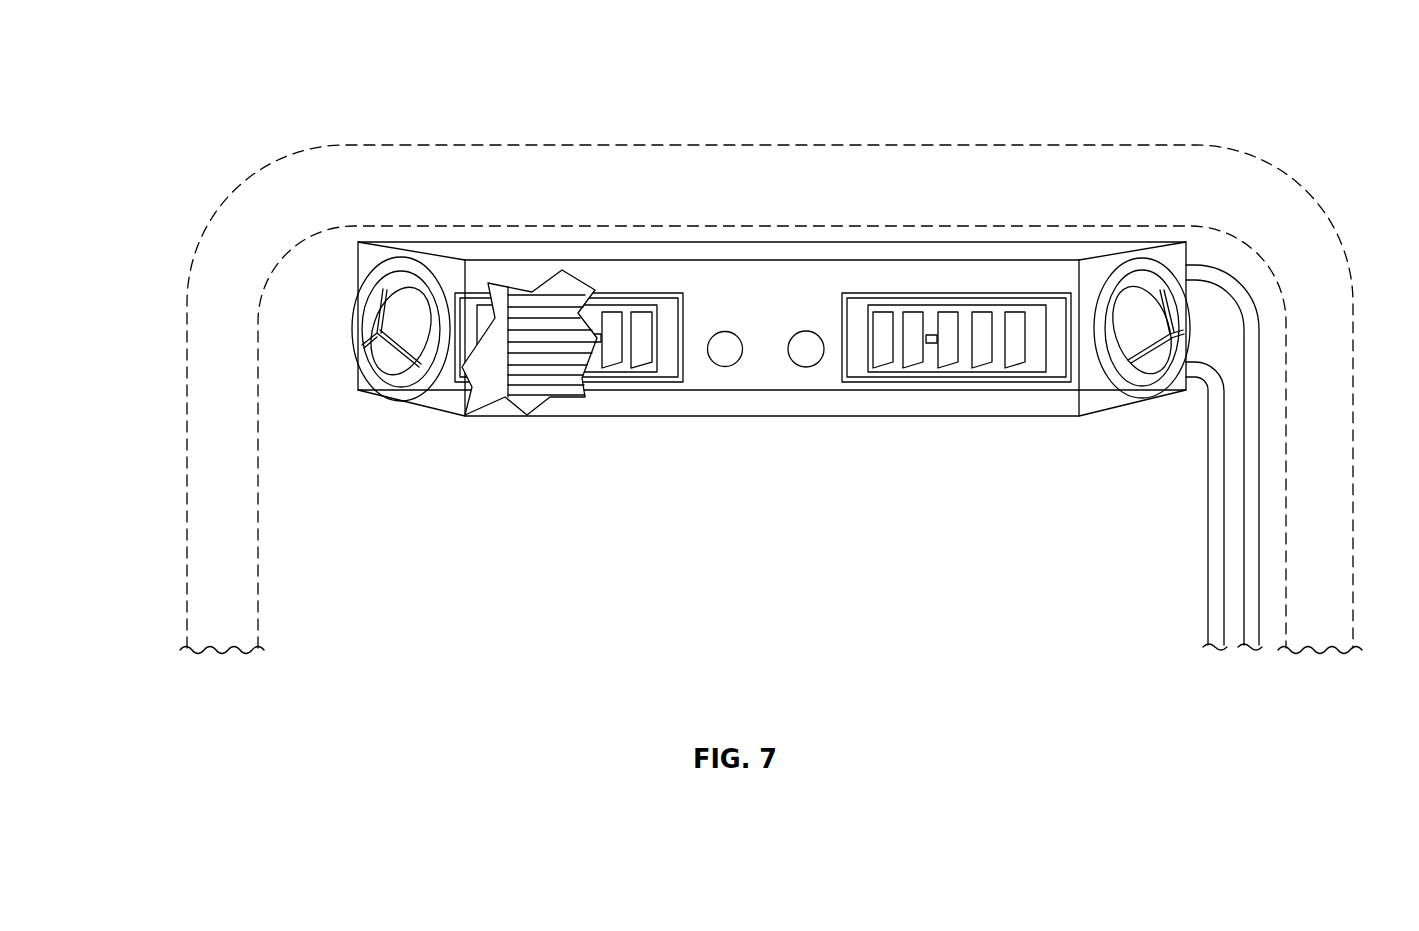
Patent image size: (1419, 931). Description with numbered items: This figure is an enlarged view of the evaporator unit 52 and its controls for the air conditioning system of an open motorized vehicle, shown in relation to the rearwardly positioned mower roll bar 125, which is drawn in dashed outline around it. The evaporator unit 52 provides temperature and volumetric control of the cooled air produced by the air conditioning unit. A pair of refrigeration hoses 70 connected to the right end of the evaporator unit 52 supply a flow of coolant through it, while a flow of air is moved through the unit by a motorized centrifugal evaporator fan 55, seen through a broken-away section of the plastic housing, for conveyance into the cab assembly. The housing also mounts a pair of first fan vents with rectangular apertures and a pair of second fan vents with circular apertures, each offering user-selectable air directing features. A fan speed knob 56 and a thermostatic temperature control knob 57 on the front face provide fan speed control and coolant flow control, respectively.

The evaporator unit 52 is at (290, 82).
The mower roll bar 125 is at (935, 143).
The evaporator fan 55 is at (526, 383).
The fan speed knob 56 is at (725, 352).
The thermostatic temperature control knob 57 is at (806, 352).
The refrigeration hoses 70 is at (1218, 557).